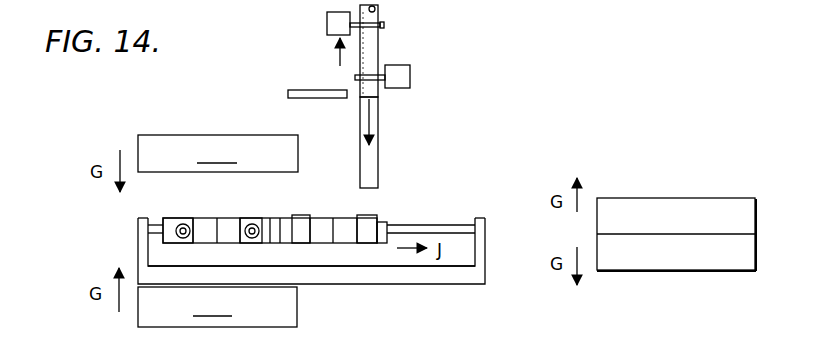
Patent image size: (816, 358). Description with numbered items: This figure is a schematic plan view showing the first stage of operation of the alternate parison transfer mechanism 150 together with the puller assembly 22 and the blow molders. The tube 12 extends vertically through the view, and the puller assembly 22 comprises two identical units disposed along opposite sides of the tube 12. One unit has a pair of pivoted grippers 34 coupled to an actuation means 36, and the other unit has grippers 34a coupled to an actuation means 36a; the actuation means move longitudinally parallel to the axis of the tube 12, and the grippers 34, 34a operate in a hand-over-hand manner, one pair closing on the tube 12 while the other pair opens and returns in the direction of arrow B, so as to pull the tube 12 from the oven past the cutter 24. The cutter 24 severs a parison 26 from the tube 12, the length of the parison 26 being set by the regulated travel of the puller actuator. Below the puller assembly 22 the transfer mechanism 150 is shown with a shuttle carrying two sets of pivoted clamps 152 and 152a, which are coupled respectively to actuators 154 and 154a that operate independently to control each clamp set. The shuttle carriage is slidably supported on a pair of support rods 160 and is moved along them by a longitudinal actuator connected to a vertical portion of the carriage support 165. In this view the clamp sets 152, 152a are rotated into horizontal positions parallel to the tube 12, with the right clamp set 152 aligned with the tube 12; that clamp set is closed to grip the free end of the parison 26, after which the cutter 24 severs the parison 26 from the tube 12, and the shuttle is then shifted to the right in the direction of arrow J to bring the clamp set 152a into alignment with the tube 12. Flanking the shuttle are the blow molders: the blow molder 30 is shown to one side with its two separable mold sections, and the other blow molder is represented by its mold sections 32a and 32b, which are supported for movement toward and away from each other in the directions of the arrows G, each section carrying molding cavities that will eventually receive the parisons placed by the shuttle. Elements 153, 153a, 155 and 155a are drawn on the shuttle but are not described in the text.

The tube 12 is at (360, 62).
The puller assembly 22 is at (389, 96).
The cutter 24 is at (311, 97).
The parison 26 is at (372, 168).
The blow molder 30 is at (680, 185).
The mold section 32a is at (218, 153).
The mold section 32b is at (217, 307).
The grippers 34 is at (372, 96).
The grippers 34a is at (384, 25).
The actuation means 36 is at (410, 77).
The actuation means 36a is at (327, 24).
The parison transfer mechanism 150 is at (335, 272).
The clamp set 152 is at (373, 218).
The clamp set 152a is at (301, 213).
The right roller block 153 is at (260, 217).
The left roller block 153a is at (190, 217).
The actuator 154 is at (340, 237).
The actuator 154a is at (324, 238).
The right spacer 155 is at (227, 238).
The left spacer 155a is at (208, 238).
The support rods 160 is at (433, 228).
The carriage support 165 is at (395, 279).